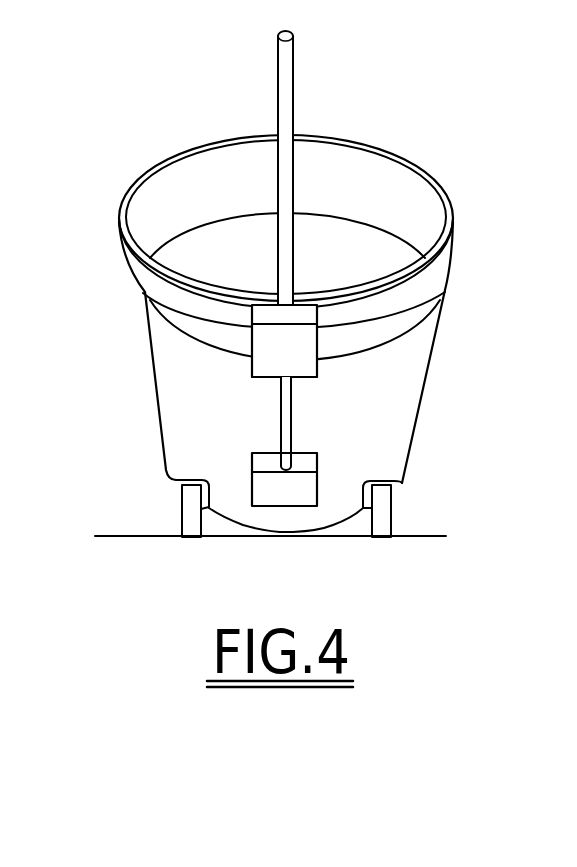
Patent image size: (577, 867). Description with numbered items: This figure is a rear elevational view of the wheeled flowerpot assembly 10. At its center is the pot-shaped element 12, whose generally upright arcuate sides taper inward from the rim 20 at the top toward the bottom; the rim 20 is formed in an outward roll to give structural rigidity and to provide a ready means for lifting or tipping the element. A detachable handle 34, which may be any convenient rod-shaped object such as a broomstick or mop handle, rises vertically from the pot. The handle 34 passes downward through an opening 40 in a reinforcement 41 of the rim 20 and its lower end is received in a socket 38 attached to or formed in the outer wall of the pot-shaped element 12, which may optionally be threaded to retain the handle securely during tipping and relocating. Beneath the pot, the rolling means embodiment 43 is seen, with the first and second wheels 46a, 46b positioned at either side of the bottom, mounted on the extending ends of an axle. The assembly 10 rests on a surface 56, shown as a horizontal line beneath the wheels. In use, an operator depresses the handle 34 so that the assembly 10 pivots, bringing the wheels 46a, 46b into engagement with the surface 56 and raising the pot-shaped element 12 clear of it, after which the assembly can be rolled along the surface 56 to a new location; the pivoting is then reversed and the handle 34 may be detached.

The wheeled flowerpot assembly 10 is at (412, 98).
The pot-shaped element 12 is at (157, 400).
The rim 20 is at (420, 276).
The handle 34 is at (278, 88).
The socket 38 is at (310, 484).
The opening 40 is at (338, 306).
The reinforcement 41 is at (298, 350).
The embodiment of rolling means 43 is at (310, 543).
The first wheel 46a is at (183, 524).
The second wheel 46b is at (383, 524).
The surface 56 is at (430, 536).